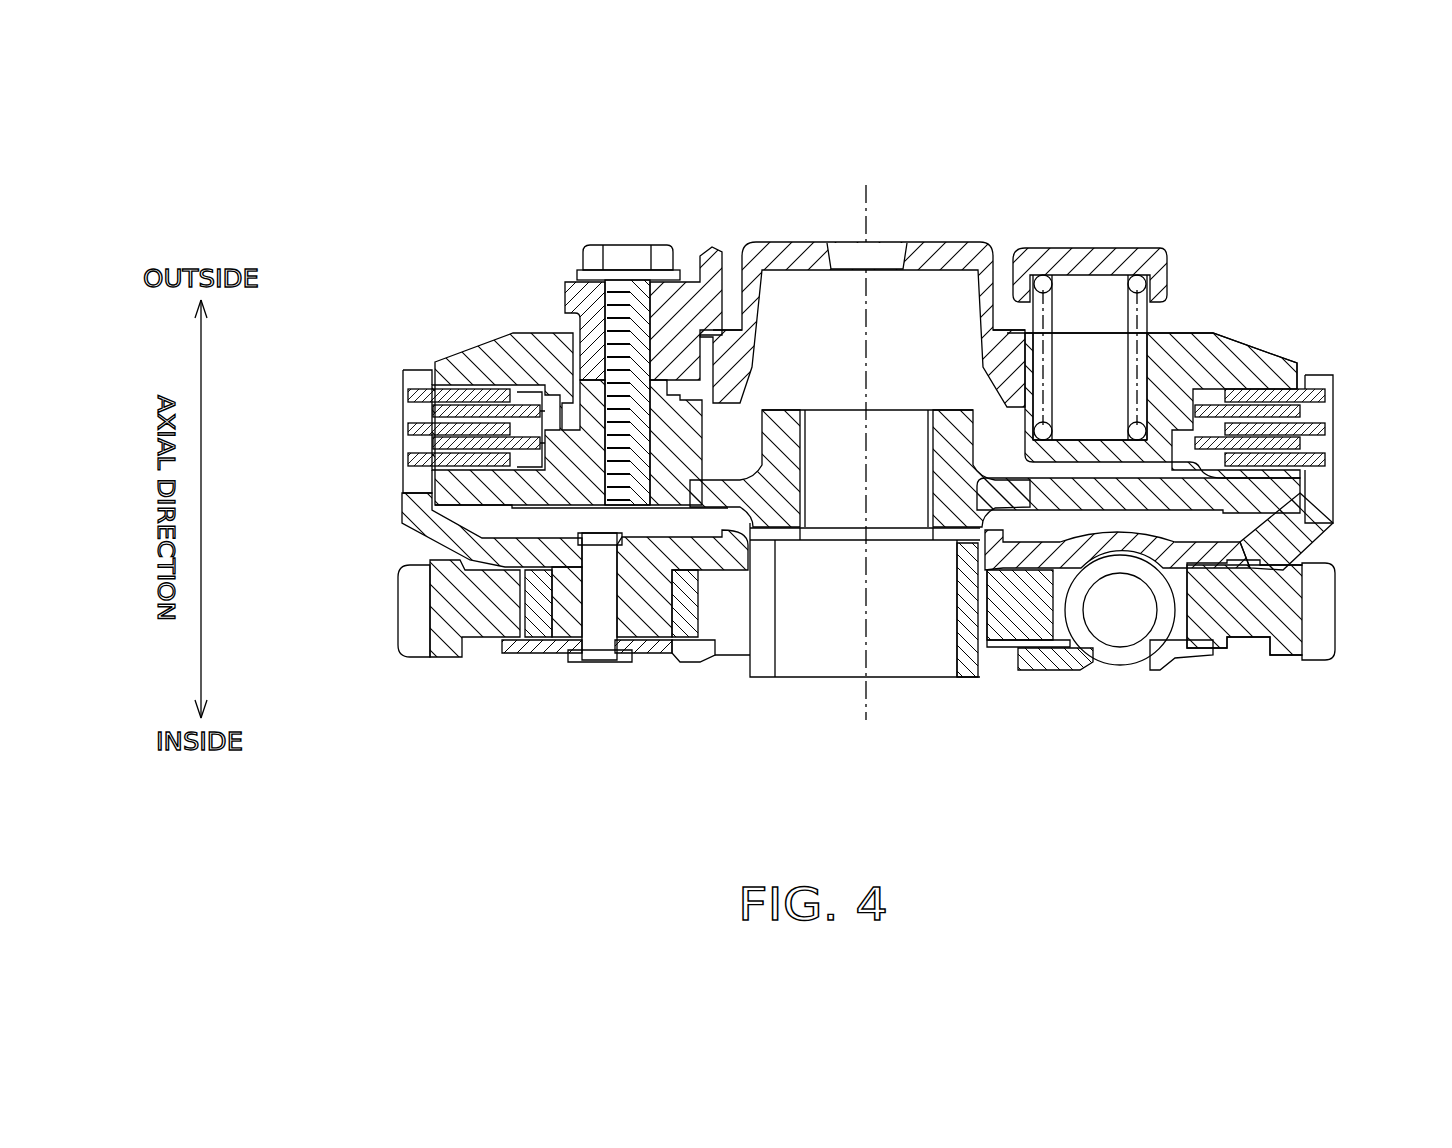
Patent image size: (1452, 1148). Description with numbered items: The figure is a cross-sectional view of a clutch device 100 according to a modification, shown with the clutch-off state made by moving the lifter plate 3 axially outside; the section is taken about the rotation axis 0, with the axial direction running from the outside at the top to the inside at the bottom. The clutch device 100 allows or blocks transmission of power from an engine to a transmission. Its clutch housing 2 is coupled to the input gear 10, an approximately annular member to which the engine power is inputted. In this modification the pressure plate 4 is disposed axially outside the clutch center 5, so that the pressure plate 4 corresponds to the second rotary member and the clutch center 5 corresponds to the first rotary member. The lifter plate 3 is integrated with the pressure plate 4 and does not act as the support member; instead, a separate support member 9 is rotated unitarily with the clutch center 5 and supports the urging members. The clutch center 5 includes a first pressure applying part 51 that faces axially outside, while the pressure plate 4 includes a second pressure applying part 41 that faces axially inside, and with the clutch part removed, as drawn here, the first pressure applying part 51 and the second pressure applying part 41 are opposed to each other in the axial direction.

The clutch device 100 is at (1152, 150).
The rotation axis 0 is at (866, 455).
The clutch housing 2 is at (390, 496).
The lifter plate 3 is at (931, 243).
The pressure plate 4 is at (1192, 330).
The second pressure applying part 41 is at (1250, 355).
The clutch center 5 is at (1191, 514).
The first pressure applying part 51 is at (1265, 478).
The support member 9 is at (696, 246).
The input gear 10 is at (385, 607).